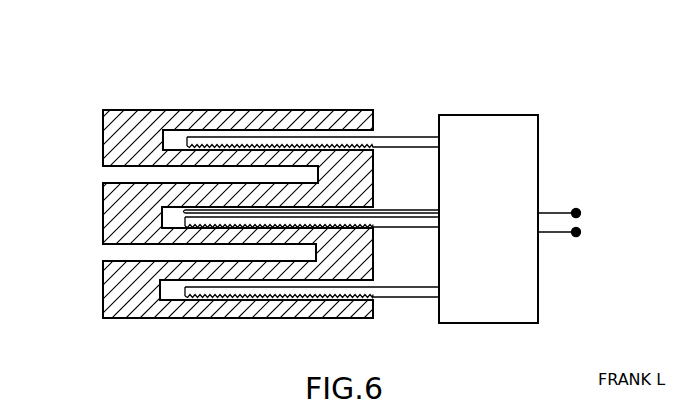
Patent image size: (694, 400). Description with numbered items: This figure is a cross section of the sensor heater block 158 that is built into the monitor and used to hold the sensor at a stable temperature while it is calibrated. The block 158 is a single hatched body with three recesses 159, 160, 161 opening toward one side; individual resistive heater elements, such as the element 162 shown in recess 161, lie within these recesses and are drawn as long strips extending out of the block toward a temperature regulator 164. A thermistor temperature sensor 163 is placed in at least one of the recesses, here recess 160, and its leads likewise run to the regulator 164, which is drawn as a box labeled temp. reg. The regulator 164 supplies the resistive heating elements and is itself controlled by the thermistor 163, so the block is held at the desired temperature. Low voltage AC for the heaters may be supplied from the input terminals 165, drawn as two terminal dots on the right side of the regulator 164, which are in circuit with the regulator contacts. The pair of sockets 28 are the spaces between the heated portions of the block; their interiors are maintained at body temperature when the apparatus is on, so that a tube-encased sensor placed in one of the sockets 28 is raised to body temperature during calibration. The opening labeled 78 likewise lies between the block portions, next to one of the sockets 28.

The heater socket 28 is at (110, 252).
The gap between heater blocks 78 is at (115, 175).
The heater block 158 is at (122, 308).
The recess 159 is at (176, 135).
The recess 160 is at (172, 215).
The recess 161 is at (173, 290).
The resistive heater element 162 is at (275, 295).
The thermistor temperature sensor 163 is at (180, 210).
The temperature regulator 164 is at (493, 323).
The input terminals 165 is at (582, 222).